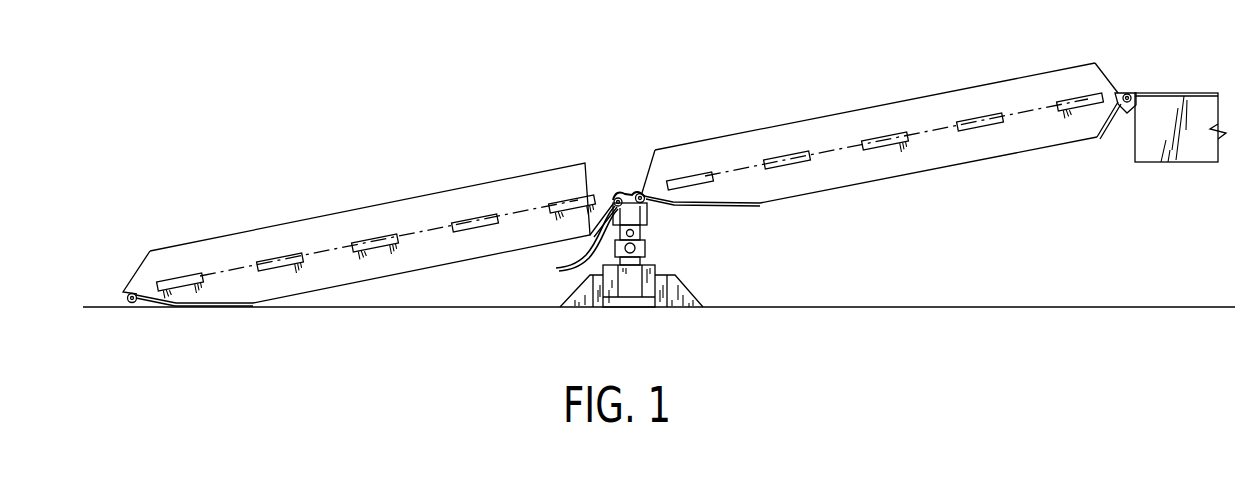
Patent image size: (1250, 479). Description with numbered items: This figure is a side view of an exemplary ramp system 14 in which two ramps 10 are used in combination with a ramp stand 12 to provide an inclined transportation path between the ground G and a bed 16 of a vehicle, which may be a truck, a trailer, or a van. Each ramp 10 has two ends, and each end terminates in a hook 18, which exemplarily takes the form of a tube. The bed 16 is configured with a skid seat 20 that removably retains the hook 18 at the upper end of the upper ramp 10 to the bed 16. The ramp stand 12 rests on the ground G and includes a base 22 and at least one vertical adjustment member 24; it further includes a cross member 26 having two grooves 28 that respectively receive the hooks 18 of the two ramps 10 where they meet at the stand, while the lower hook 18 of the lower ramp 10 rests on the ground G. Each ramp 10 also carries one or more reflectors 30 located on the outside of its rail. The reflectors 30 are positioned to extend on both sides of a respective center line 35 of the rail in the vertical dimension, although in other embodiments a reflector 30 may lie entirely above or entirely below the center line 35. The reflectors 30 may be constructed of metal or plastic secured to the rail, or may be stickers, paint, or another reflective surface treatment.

The ramp 10 is at (622, 165).
The ramp stand 12 is at (661, 279).
The ramp system 14 is at (868, 138).
The bed 16 is at (1117, 150).
The hook 18 is at (130, 303).
The skid seat 20 is at (1163, 93).
The base 22 is at (679, 300).
The vertical adjustment member 24 is at (648, 240).
The cross member 26 is at (647, 205).
The grooves 28 is at (577, 246).
The reflectors 30 is at (185, 276).
The center line 35 is at (330, 251).
The ground G is at (372, 307).